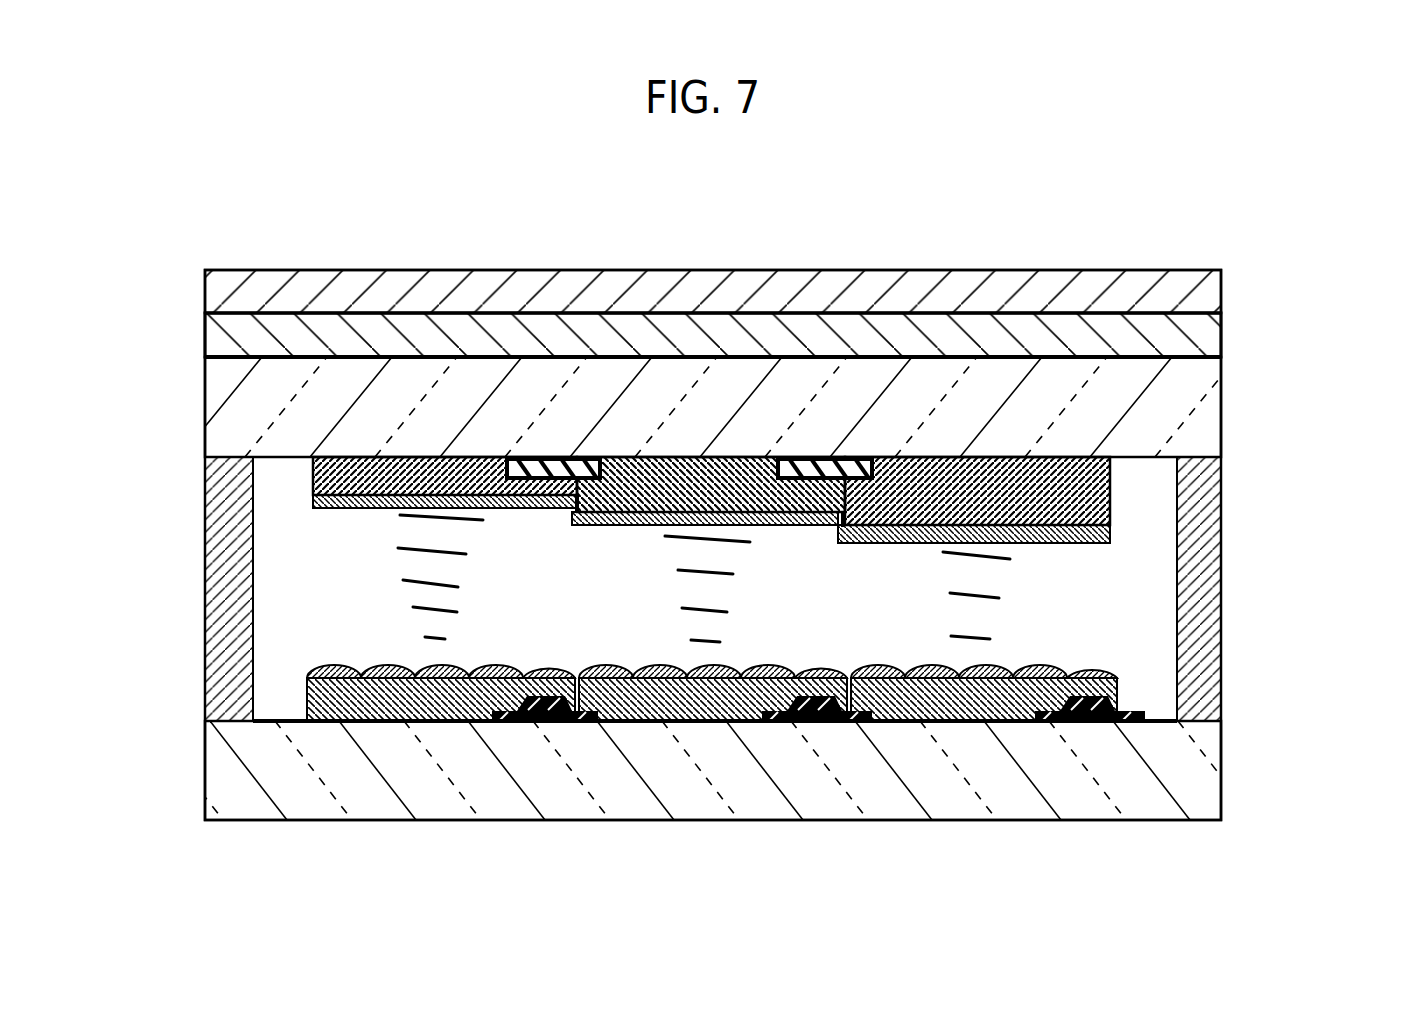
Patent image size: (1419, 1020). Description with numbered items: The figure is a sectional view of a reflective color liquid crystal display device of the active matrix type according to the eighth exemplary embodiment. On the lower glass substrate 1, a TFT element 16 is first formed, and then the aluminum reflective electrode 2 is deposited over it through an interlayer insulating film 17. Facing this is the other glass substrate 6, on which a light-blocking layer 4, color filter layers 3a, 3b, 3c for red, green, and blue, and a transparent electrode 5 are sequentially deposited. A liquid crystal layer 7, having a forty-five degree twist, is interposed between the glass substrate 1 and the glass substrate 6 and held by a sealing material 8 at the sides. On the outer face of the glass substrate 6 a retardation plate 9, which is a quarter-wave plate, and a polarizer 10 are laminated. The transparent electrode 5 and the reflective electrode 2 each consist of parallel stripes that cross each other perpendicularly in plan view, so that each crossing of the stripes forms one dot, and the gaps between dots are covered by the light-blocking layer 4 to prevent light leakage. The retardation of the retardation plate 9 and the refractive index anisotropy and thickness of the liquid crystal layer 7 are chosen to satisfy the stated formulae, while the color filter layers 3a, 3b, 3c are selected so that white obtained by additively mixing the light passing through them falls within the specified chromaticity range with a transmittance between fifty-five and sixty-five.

The glass substrate 1 is at (1187, 790).
The reflective electrode 2 is at (1107, 677).
The color filter layer 3a is at (400, 477).
The color filter layer 3b is at (700, 478).
The color filter layer 3c is at (987, 488).
The light-blocking layer 4 is at (545, 470).
The transparent electrode 5 is at (1112, 533).
The glass substrate 6 is at (1204, 415).
The liquid crystal layer 7 is at (1030, 595).
The sealing material 8 is at (217, 582).
The retardation plate 9 is at (1207, 333).
The polarizer 10 is at (1200, 300).
The TFT element 16 is at (843, 722).
The interlayer insulating film 17 is at (983, 720).